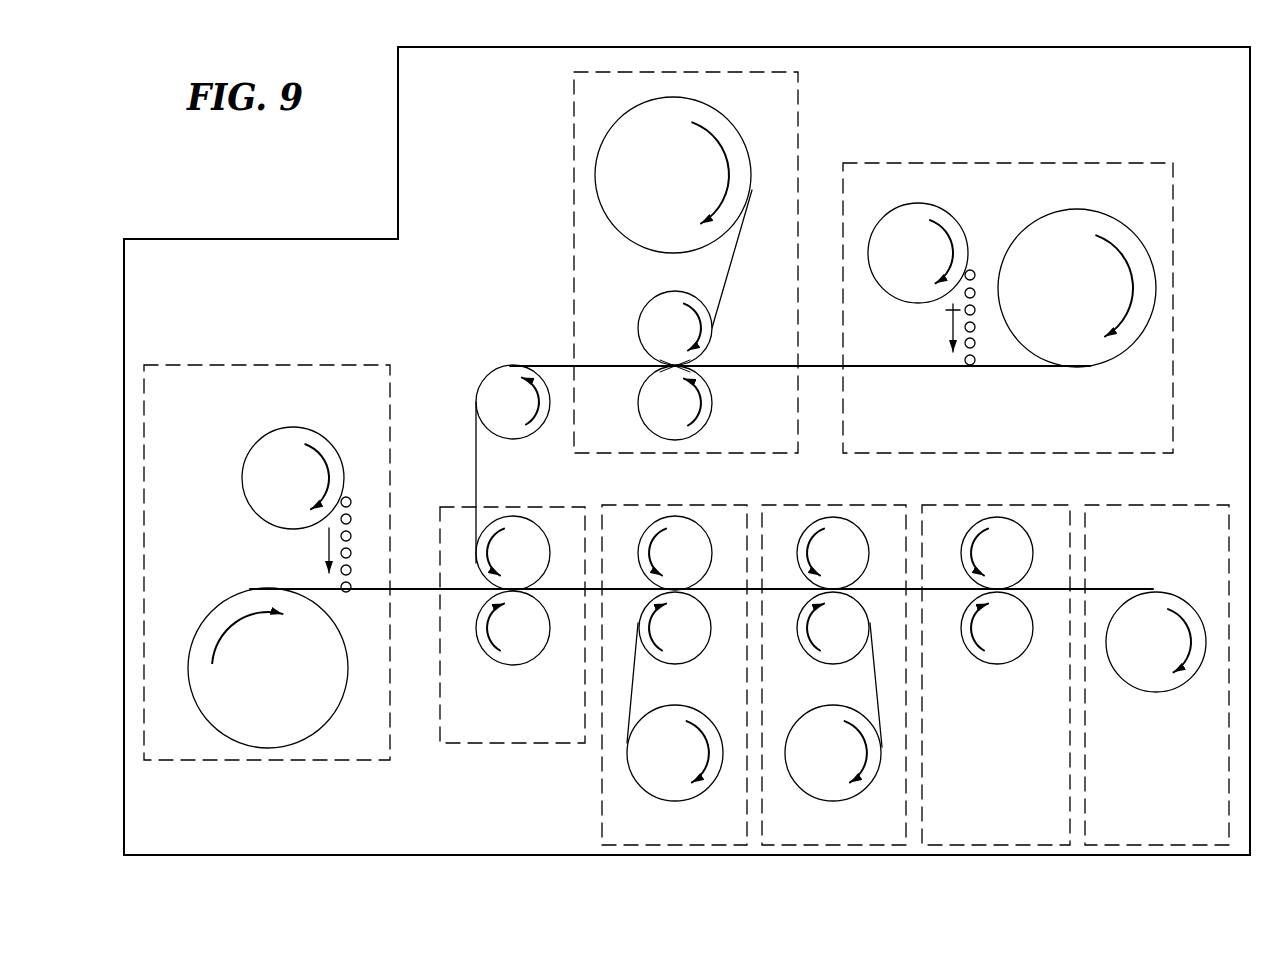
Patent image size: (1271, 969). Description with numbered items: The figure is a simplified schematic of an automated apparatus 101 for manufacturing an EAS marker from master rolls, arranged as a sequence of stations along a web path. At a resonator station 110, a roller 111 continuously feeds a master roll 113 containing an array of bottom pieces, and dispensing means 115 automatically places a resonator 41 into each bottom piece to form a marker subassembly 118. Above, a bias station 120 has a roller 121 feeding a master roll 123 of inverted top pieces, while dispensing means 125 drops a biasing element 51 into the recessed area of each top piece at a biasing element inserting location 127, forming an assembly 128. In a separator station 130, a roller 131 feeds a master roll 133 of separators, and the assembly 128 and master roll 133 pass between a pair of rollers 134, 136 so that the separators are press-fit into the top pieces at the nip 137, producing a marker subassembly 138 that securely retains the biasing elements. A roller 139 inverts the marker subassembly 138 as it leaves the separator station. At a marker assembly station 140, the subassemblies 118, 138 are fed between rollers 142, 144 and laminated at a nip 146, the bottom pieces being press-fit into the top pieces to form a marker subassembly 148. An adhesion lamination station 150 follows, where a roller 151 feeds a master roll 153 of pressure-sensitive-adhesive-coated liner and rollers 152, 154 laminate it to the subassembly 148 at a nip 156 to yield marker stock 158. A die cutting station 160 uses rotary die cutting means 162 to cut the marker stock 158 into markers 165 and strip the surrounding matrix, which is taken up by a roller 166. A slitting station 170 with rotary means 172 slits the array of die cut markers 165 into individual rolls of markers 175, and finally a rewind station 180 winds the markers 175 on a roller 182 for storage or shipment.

The automated apparatus 101 is at (250, 236).
The resonator station 110 is at (215, 522).
The roller 111 is at (289, 687).
The master roll 113 is at (312, 589).
The dispensing means 115 is at (312, 494).
The resonator 41 is at (351, 570).
The marker subassembly 118 is at (415, 589).
The bias station 120 is at (1012, 201).
The roller 121 is at (1097, 304).
The master roll 123 is at (1005, 367).
The dispensing means 125 is at (934, 269).
The biasing element inserting location 127 is at (968, 372).
The biasing element 51 is at (965, 343).
The assembly 128 is at (762, 366).
The separator station 130 is at (780, 112).
The roller 131 is at (695, 196).
The master roll 133 is at (727, 278).
The roller 134 is at (653, 302).
The roller 136 is at (683, 435).
The nip 137 is at (675, 366).
The marker subassembly 138 is at (608, 367).
The roller 139 is at (530, 414).
The marker assembly station 140 is at (530, 731).
The roller 142 is at (530, 565).
The roller 144 is at (530, 640).
The nip 146 is at (518, 588).
The marker subassembly 148 is at (563, 595).
The adhesion lamination station 150 is at (692, 839).
The roller 151 is at (690, 767).
The roller 152 is at (695, 569).
The master roll 153 is at (632, 680).
The roller 154 is at (695, 642).
The nip 156 is at (672, 588).
The marker stock 158 is at (722, 590).
The die cutting station 160 is at (852, 842).
The rotary die cutting means 162 is at (790, 573).
The markers 165 is at (882, 590).
The roller 166 is at (849, 771).
The slitting station 170 is at (1014, 842).
The rotary means 172 is at (952, 573).
The rolls of markers 175 is at (1047, 590).
The rewind station 180 is at (1174, 841).
The roller 182 is at (1174, 659).